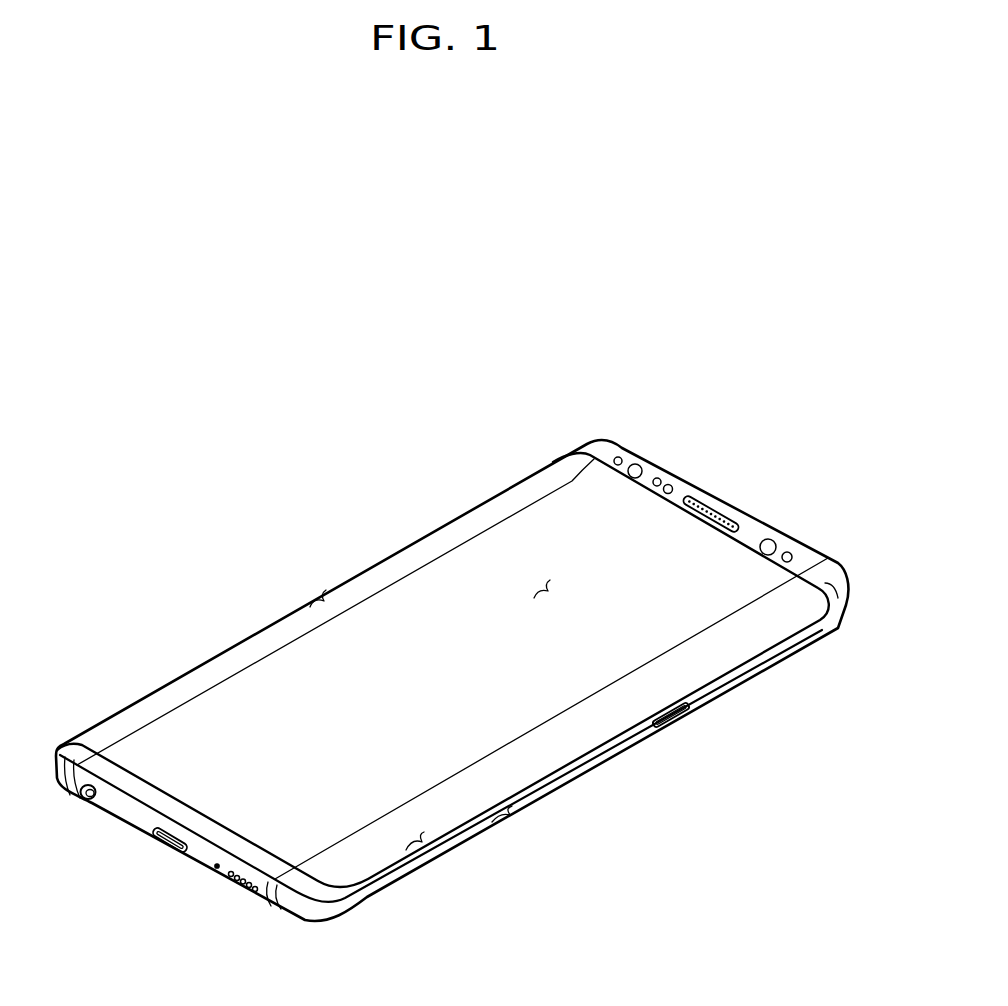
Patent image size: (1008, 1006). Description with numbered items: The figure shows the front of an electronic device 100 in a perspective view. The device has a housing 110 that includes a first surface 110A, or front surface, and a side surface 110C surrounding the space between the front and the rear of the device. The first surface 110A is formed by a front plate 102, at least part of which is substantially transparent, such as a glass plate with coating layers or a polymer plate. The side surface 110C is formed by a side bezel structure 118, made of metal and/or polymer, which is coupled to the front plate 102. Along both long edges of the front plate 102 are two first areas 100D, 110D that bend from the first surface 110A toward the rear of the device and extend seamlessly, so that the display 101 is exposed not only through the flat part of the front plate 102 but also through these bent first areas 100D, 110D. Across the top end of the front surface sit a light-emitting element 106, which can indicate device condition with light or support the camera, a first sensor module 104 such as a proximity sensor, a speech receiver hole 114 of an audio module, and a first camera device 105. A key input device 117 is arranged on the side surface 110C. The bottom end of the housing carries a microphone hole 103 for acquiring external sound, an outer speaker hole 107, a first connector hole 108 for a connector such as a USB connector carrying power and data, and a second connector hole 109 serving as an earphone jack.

The electronic device 100 is at (323, 494).
The first area 100D is at (313, 598).
The display 101 is at (283, 700).
The front plate 102 is at (832, 580).
The microphone hole 103 is at (217, 870).
The first sensor module 104 is at (669, 486).
The first camera device 105 is at (788, 552).
The light-emitting element 106 is at (636, 465).
The outer speaker hole 107 is at (238, 897).
The first connector hole 108 is at (165, 847).
The second connector hole 109 is at (86, 801).
The housing 110 is at (608, 762).
The first surface 110A is at (540, 590).
The side surface 110C is at (508, 815).
The first area 110D is at (417, 845).
The speech receiver hole 114 is at (712, 506).
The key input device 117 is at (688, 717).
The side bezel structure 118 is at (787, 650).